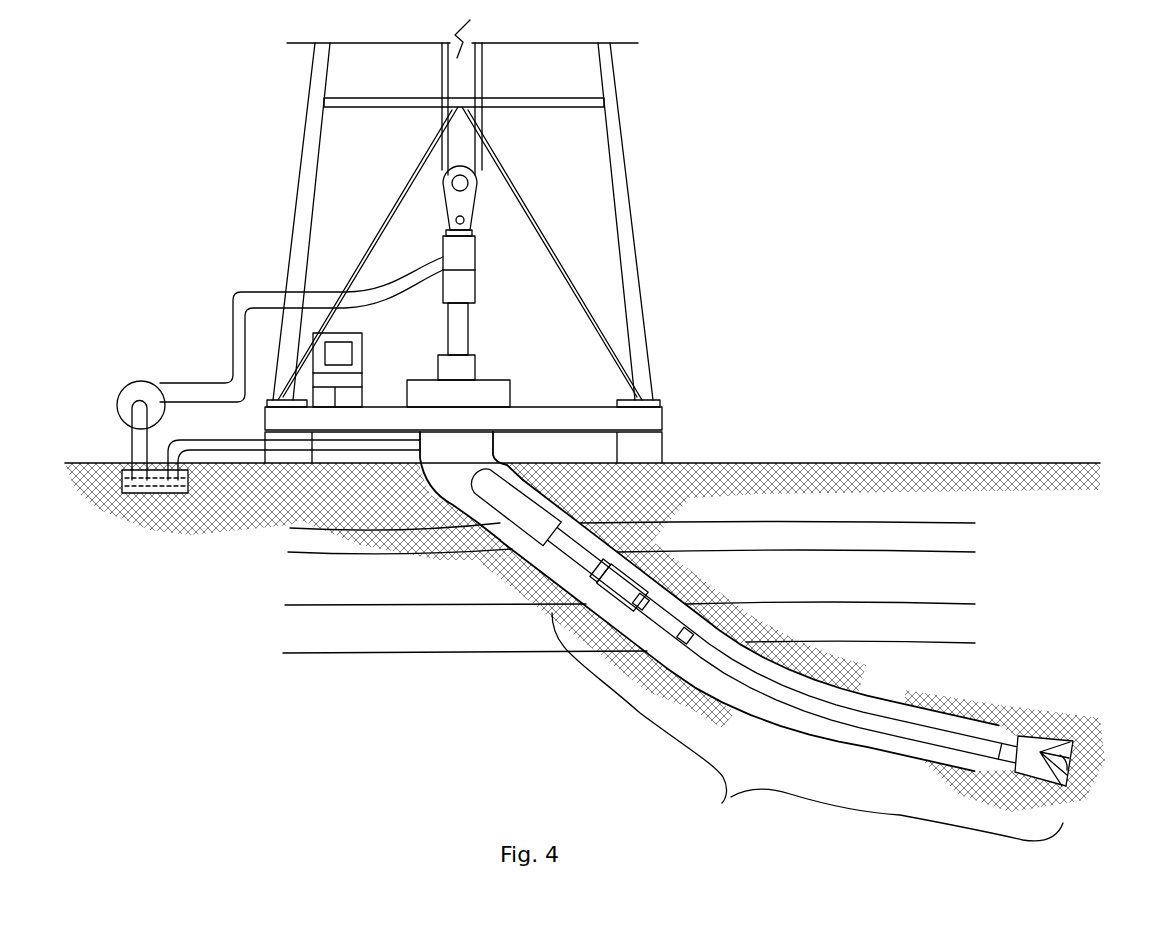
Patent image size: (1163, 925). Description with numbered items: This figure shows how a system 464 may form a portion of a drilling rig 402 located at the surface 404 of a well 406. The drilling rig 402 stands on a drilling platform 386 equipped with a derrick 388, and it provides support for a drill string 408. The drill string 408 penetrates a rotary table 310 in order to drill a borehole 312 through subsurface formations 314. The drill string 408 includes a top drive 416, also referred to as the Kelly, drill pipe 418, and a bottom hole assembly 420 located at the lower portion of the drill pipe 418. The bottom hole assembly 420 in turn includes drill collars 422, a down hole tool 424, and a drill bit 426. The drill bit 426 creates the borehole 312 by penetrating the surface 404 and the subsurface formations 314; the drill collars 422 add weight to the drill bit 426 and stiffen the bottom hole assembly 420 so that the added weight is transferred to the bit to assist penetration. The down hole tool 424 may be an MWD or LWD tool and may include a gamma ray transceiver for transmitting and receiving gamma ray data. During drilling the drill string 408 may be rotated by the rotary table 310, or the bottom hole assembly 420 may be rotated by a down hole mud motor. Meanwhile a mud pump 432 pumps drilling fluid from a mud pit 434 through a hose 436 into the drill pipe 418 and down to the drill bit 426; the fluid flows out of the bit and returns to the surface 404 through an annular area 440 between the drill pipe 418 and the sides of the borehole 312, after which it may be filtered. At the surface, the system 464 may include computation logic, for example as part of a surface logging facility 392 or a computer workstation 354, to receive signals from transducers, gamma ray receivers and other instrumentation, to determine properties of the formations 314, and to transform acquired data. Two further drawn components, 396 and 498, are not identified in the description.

The system 464 is at (190, 125).
The derrick 388 is at (620, 122).
The drilling rig 402 is at (638, 212).
The drilling platform 386 is at (663, 408).
The surface 404 is at (682, 462).
The well 406 is at (508, 460).
The top drive 416 is at (468, 322).
The rotary drive block 498 is at (475, 368).
The rotary table 310 is at (425, 378).
The surface logging facility 392 is at (352, 333).
The computer workstation 354 is at (363, 346).
The lower housing 396 is at (353, 357).
The mud pump 432 is at (148, 383).
The hose 436 is at (243, 293).
The mud pit 434 is at (140, 492).
The drill string 408 is at (816, 699).
The borehole 312 is at (775, 627).
The drill pipe 418 is at (590, 535).
The drill collars 422 is at (543, 508).
The annular area 440 is at (632, 580).
The down hole tool 424 is at (970, 738).
The drill bit 426 is at (1040, 745).
The subsurface formations 314 is at (277, 527).
The bottom hole assembly 420 is at (807, 727).